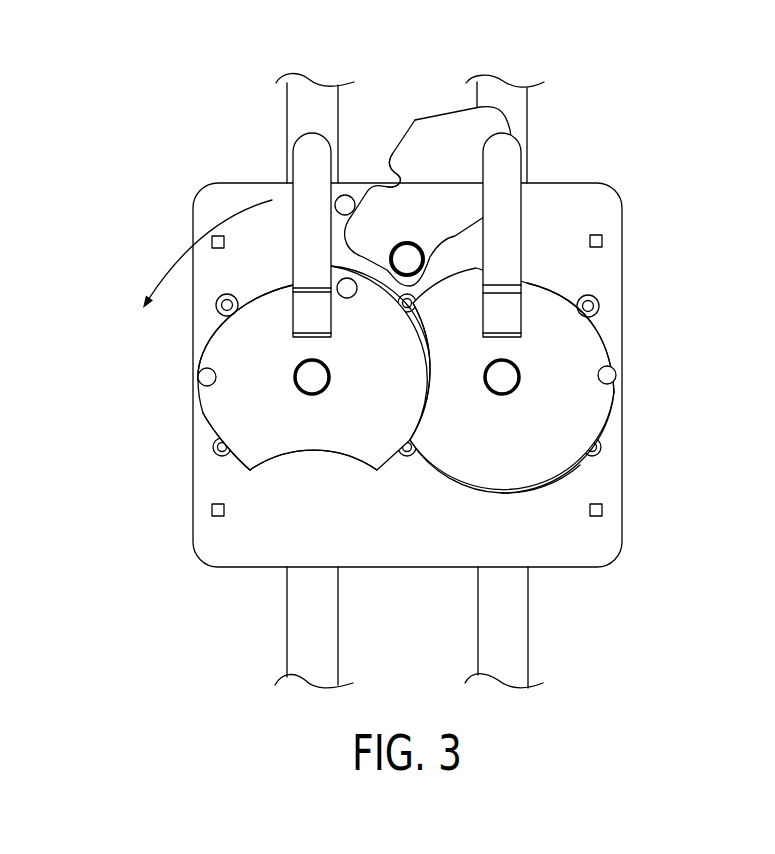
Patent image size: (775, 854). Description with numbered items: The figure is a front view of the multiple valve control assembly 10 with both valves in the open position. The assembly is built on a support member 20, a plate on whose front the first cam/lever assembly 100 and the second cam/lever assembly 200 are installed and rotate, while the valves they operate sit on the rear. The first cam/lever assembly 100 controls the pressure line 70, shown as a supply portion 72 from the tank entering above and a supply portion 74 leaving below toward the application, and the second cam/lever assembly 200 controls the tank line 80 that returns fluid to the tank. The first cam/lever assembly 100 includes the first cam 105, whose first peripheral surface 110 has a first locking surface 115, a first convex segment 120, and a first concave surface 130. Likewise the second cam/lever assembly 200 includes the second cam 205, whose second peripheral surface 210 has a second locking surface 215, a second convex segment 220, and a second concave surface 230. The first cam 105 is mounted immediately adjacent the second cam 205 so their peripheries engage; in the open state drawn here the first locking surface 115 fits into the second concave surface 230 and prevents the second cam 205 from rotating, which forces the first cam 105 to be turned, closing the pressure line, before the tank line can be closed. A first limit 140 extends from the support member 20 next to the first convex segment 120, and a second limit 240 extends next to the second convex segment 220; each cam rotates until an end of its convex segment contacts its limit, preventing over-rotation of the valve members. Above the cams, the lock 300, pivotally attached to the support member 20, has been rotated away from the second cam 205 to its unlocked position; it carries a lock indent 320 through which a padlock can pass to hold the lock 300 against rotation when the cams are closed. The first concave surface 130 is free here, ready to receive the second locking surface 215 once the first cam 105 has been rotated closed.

The multiple valve control assembly 10 is at (602, 122).
The support member 20 is at (590, 553).
The pressure line 70 is at (287, 130).
The supply portion 72 is at (313, 84).
The supply portion 74 is at (317, 660).
The tank line 80 is at (527, 135).
The first cam/lever assembly 100 is at (217, 413).
The first cam 105 is at (245, 443).
The first peripheral surface 110 is at (376, 285).
The first locking surface 115 is at (422, 348).
The first convex segment 120 is at (232, 334).
The first concave surface 130 is at (310, 452).
The first limit 140 is at (197, 372).
The second cam/lever assembly 200 is at (567, 433).
The second cam 205 is at (537, 467).
The second peripheral surface 210 is at (562, 472).
The second locking surface 215 is at (508, 502).
The second convex segment 220 is at (560, 295).
The second concave surface 230 is at (430, 370).
The second limit 240 is at (610, 367).
The lock 300 is at (453, 118).
The lock indent 320 is at (388, 171).